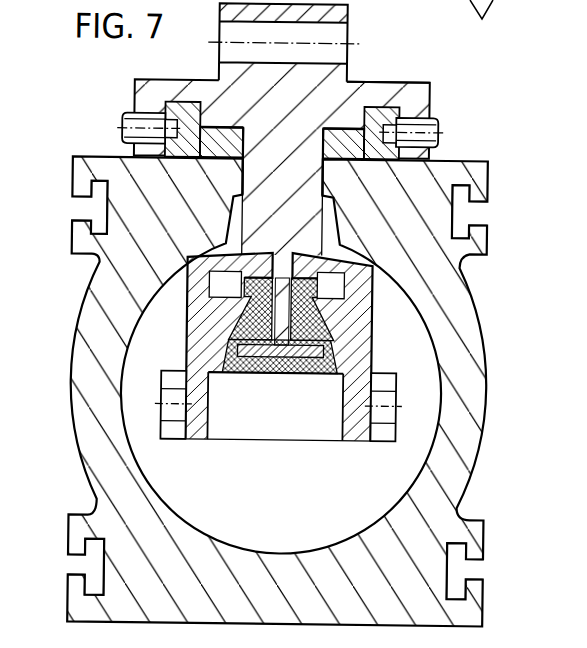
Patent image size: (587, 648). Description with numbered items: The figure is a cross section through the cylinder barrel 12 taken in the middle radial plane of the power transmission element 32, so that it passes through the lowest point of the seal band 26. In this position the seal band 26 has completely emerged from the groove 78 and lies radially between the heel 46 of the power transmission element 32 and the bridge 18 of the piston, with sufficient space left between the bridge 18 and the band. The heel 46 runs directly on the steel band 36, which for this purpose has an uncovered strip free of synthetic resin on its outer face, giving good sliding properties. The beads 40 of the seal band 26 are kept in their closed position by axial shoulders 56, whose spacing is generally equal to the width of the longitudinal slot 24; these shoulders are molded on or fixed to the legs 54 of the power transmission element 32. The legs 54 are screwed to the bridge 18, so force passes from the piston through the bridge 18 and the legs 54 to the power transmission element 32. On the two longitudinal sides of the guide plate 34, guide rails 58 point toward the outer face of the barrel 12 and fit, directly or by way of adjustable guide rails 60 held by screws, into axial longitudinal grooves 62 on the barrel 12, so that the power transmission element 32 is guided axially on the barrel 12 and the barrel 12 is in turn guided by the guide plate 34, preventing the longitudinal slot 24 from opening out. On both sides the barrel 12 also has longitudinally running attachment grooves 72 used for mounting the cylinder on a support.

The cylinder barrel 12 is at (478, 381).
The bridge 18 is at (297, 430).
The longitudinal slot 24 is at (236, 175).
The seal band 26 is at (307, 380).
The power transmission element 32 is at (311, 180).
The guide plate 34 is at (386, 79).
The steel band 36 is at (250, 375).
The beads 40 is at (250, 295).
The heel 46 is at (283, 373).
The legs 54 is at (198, 435).
The axial shoulders 56 is at (220, 284).
The guide rails 58 is at (139, 92).
The guide rails 60 is at (163, 116).
The axial longitudinal grooves 62 is at (195, 150).
The attachment grooves 72 is at (97, 566).
The groove 78 is at (231, 220).